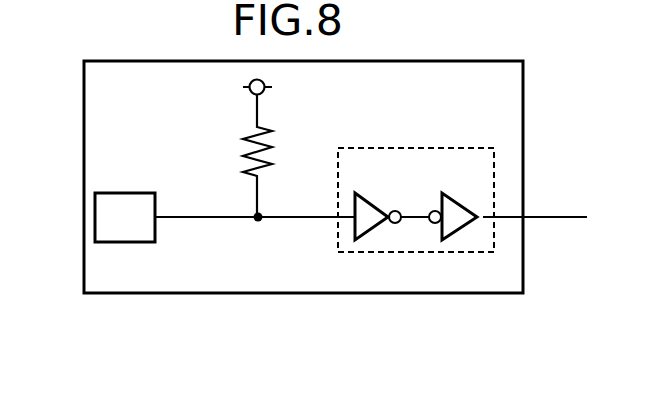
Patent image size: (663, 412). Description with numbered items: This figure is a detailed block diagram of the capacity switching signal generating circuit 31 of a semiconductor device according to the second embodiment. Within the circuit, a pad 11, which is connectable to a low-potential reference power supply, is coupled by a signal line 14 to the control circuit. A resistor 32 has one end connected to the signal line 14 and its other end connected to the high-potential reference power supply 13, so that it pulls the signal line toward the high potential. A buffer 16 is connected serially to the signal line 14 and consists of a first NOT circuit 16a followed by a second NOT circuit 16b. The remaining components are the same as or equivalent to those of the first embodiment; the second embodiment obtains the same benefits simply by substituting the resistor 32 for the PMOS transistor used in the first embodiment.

The capacity switching signal generating circuit 31 is at (83, 91).
The pad 11 is at (127, 193).
The signal line 14 is at (296, 219).
The resistor 32 is at (239, 150).
The high-potential reference power supply 13 is at (274, 89).
The buffer 16 is at (412, 145).
The first NOT circuit 16a is at (378, 199).
The second NOT circuit 16b is at (456, 199).